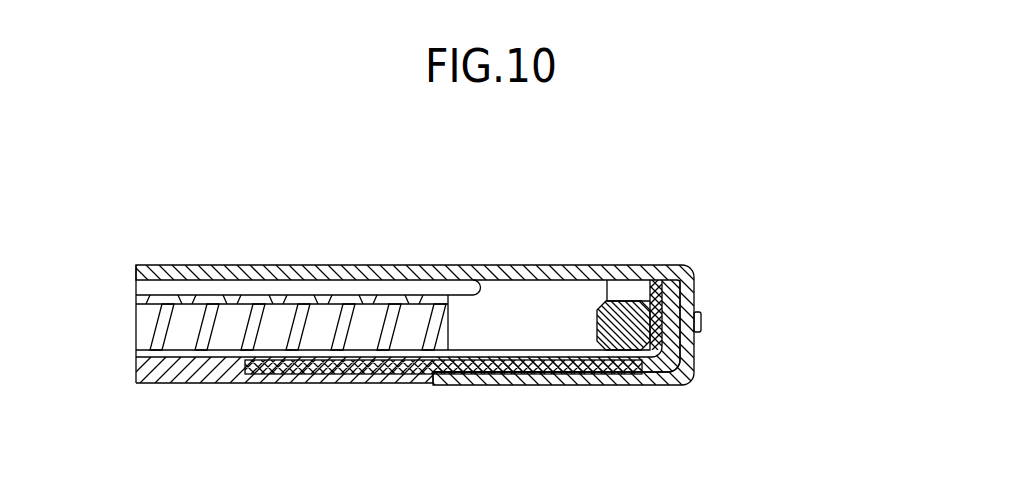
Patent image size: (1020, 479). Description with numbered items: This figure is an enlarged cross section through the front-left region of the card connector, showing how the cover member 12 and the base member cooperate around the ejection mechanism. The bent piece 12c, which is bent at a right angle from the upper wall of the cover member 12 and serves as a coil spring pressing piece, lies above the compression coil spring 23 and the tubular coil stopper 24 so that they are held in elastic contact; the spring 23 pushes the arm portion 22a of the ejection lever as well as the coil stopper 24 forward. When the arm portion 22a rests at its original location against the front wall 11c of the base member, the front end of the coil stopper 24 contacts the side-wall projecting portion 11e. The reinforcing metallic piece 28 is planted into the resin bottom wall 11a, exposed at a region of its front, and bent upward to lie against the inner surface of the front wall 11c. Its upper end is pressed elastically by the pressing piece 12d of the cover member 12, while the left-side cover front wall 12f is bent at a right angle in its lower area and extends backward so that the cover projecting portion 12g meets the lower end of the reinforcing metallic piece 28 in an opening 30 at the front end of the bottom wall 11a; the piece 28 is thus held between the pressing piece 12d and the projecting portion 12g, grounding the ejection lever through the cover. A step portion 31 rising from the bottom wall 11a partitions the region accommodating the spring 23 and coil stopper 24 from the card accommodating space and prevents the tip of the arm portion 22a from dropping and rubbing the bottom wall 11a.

The cover member 12 is at (262, 257).
The bent piece 12c is at (188, 284).
The pressing piece 12d is at (577, 265).
The left-side cover front wall 12f is at (695, 371).
The cover projecting portion 12g is at (622, 376).
The bottom wall 11a is at (198, 384).
The front wall 11c is at (695, 347).
The side-wall projecting portion 11e is at (633, 288).
The arm portion 22a is at (597, 322).
The compression coil spring 23 is at (397, 304).
The tubular coil stopper 24 is at (495, 293).
The reinforcing metallic piece 28 is at (680, 292).
The opening 30 is at (593, 376).
The step portion 31 is at (280, 384).